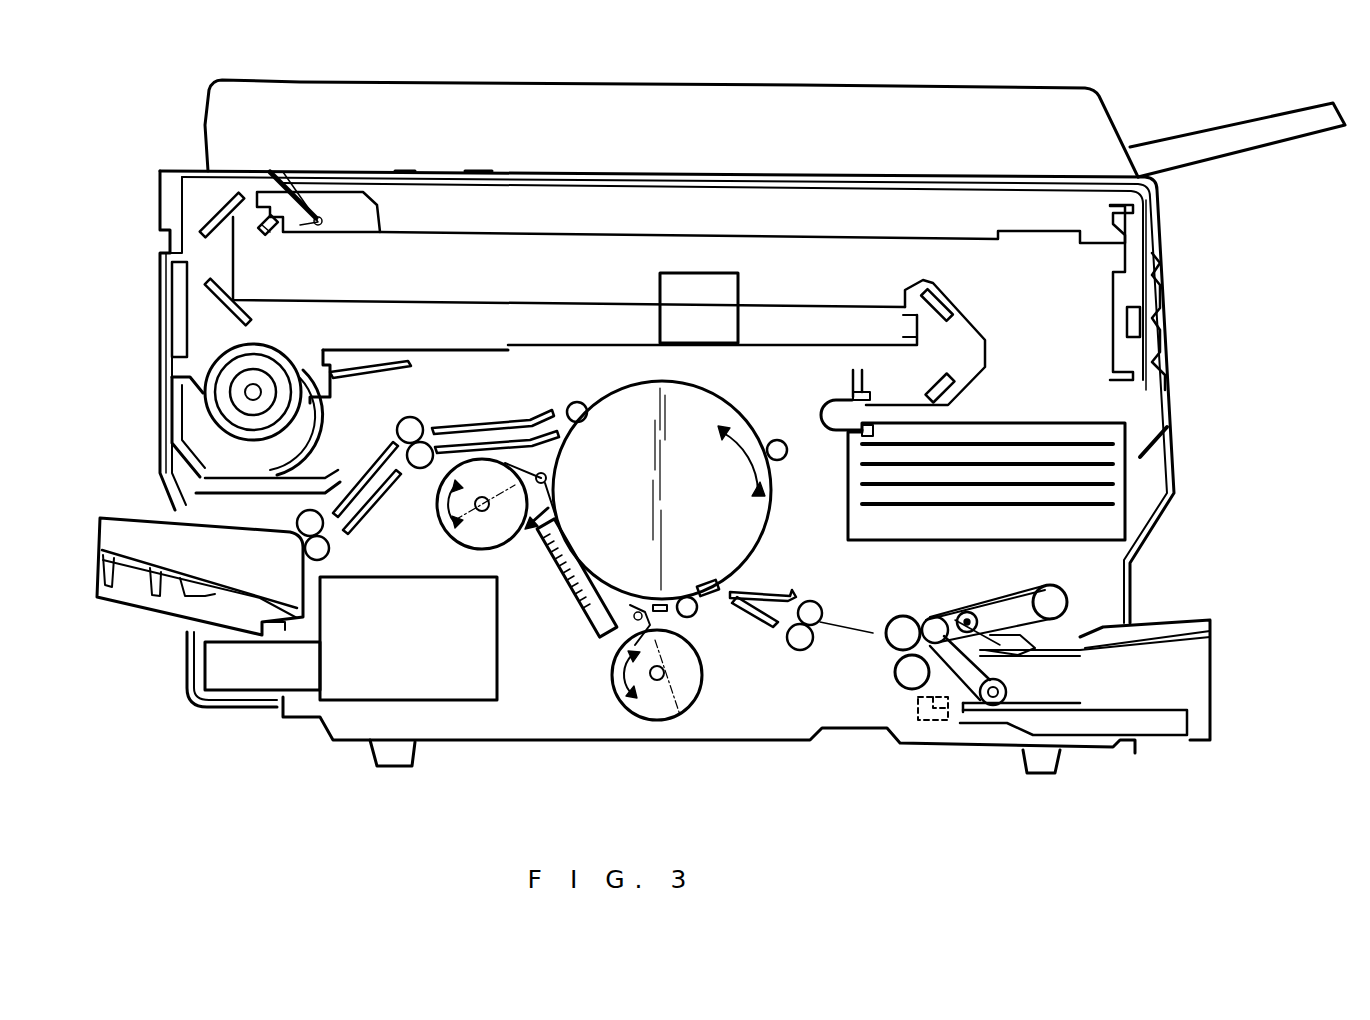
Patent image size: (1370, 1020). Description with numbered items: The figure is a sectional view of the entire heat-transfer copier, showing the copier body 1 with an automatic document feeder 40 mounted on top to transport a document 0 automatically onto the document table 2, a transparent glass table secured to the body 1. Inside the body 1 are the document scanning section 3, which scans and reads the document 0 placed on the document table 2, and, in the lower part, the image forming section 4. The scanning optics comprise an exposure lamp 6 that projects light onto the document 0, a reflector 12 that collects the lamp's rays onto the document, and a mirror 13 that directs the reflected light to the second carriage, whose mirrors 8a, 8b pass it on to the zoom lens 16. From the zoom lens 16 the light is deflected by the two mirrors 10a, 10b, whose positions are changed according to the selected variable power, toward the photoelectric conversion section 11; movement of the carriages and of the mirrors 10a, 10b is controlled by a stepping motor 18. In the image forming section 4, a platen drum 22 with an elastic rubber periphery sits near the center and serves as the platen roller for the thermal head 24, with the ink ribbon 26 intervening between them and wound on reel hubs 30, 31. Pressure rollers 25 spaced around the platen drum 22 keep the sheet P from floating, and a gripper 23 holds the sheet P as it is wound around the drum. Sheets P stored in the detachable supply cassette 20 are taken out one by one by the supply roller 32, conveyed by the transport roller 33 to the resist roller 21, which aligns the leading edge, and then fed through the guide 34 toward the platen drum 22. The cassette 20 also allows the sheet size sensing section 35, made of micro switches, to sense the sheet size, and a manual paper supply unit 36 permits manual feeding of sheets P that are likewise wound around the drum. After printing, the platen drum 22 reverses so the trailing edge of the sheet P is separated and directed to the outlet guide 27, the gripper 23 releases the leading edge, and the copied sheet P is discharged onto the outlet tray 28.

The automatic document feeder 40 is at (750, 100).
The document 0 is at (404, 172).
The document table 2 is at (480, 172).
The image forming section 4 is at (550, 700).
The copier body 1 is at (1148, 290).
The document scanning section 3 is at (1063, 337).
The reflector 12 is at (323, 218).
The exposure lamp 6 is at (318, 217).
The mirror 8a is at (205, 215).
The mirror 8b is at (215, 300).
The mirror 13 is at (275, 233).
The zoom lens 16 is at (665, 288).
The mirror 10a is at (947, 290).
The mirror 10b is at (960, 393).
The photoelectric conversion section 11 is at (840, 392).
The manual paper supply unit 36 is at (1168, 617).
The sheet P is at (1177, 682).
The supply cassette 20 is at (1173, 708).
The stepping motor 18 is at (205, 372).
The outlet tray 28 is at (130, 552).
The outlet guide 27 is at (453, 422).
The platen drum 22 is at (748, 538).
The pressure rollers 25 is at (567, 407).
The reel hub 31 is at (487, 512).
The thermal head 24 is at (600, 627).
The gripper 23 is at (710, 580).
The ink ribbon 26 is at (682, 713).
The reel hub 30 is at (657, 681).
The guide 34 is at (770, 587).
The resist roller 21 is at (822, 625).
The transport roller 33 is at (905, 688).
The supply roller 32 is at (990, 705).
The sheet size sensing section 35 is at (935, 723).